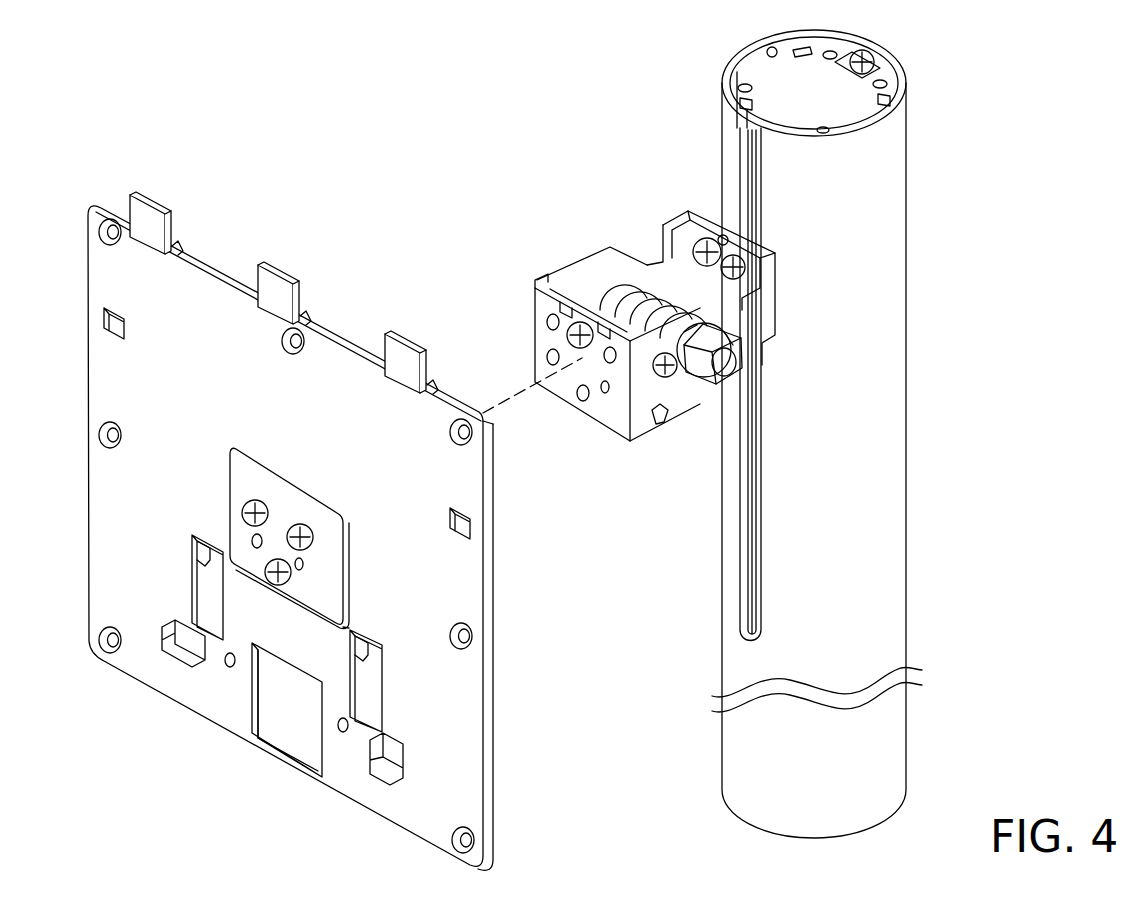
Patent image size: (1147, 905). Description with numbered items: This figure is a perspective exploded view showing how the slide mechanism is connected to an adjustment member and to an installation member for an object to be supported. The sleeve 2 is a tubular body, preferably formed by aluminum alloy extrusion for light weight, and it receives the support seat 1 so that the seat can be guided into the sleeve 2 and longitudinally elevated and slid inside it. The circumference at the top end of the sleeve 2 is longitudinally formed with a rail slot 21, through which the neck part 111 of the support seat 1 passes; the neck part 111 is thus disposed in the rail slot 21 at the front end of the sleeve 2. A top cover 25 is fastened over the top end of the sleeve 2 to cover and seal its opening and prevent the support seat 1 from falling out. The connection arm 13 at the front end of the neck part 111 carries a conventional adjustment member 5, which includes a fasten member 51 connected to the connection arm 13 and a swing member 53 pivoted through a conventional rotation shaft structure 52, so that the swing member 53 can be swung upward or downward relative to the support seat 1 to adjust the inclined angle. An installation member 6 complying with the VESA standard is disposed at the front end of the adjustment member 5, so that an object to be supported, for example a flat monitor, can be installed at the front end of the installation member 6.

The support seat 1 is at (776, 284).
The sleeve 2 is at (860, 481).
The adjustment member 5 is at (612, 416).
The installation member 6 is at (463, 688).
The connection arm 13 is at (680, 203).
The rail slot 21 is at (743, 147).
The top cover 25 is at (772, 76).
The fasten member 51 is at (715, 395).
The rotation shaft structure 52 is at (710, 392).
The swing member 53 is at (643, 408).
The neck part 111 is at (747, 207).